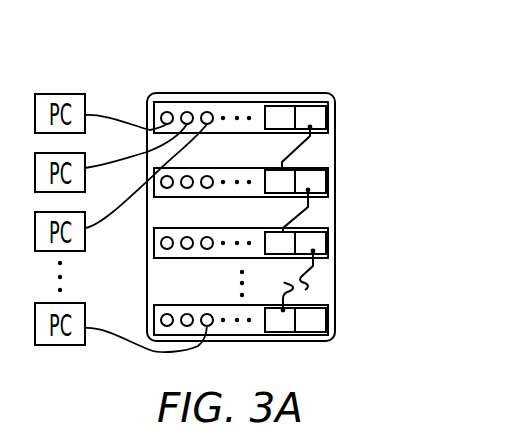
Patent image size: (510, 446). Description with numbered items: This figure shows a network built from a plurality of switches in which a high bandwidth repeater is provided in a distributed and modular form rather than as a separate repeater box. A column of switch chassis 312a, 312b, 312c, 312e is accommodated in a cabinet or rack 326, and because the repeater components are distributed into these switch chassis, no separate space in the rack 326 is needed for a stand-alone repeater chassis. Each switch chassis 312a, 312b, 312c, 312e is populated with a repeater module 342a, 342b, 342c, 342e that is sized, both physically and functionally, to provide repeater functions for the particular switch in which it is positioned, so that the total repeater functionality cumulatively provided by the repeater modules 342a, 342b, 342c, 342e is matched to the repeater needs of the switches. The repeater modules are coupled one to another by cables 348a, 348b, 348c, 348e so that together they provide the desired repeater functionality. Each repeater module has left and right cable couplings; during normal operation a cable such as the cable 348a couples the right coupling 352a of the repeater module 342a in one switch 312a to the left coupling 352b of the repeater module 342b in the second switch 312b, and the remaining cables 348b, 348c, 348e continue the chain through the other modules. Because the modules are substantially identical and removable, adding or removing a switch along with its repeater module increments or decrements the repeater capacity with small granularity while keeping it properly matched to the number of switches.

The rack 326 is at (190, 94).
The switch chassis 312a is at (331, 96).
The switch chassis 312b is at (331, 166).
The switch chassis 312c is at (331, 227).
The switch chassis 312e is at (331, 323).
The repeater module 342a is at (320, 117).
The repeater module 342b is at (320, 181).
The repeater module 342c is at (320, 244).
The repeater module 342e is at (318, 323).
The cable 348a is at (296, 150).
The cable 348b is at (301, 214).
The cable 348c is at (304, 279).
The cable 348e is at (272, 296).
The right cable coupling 352a is at (301, 106).
The left cable coupling 352b is at (264, 106).